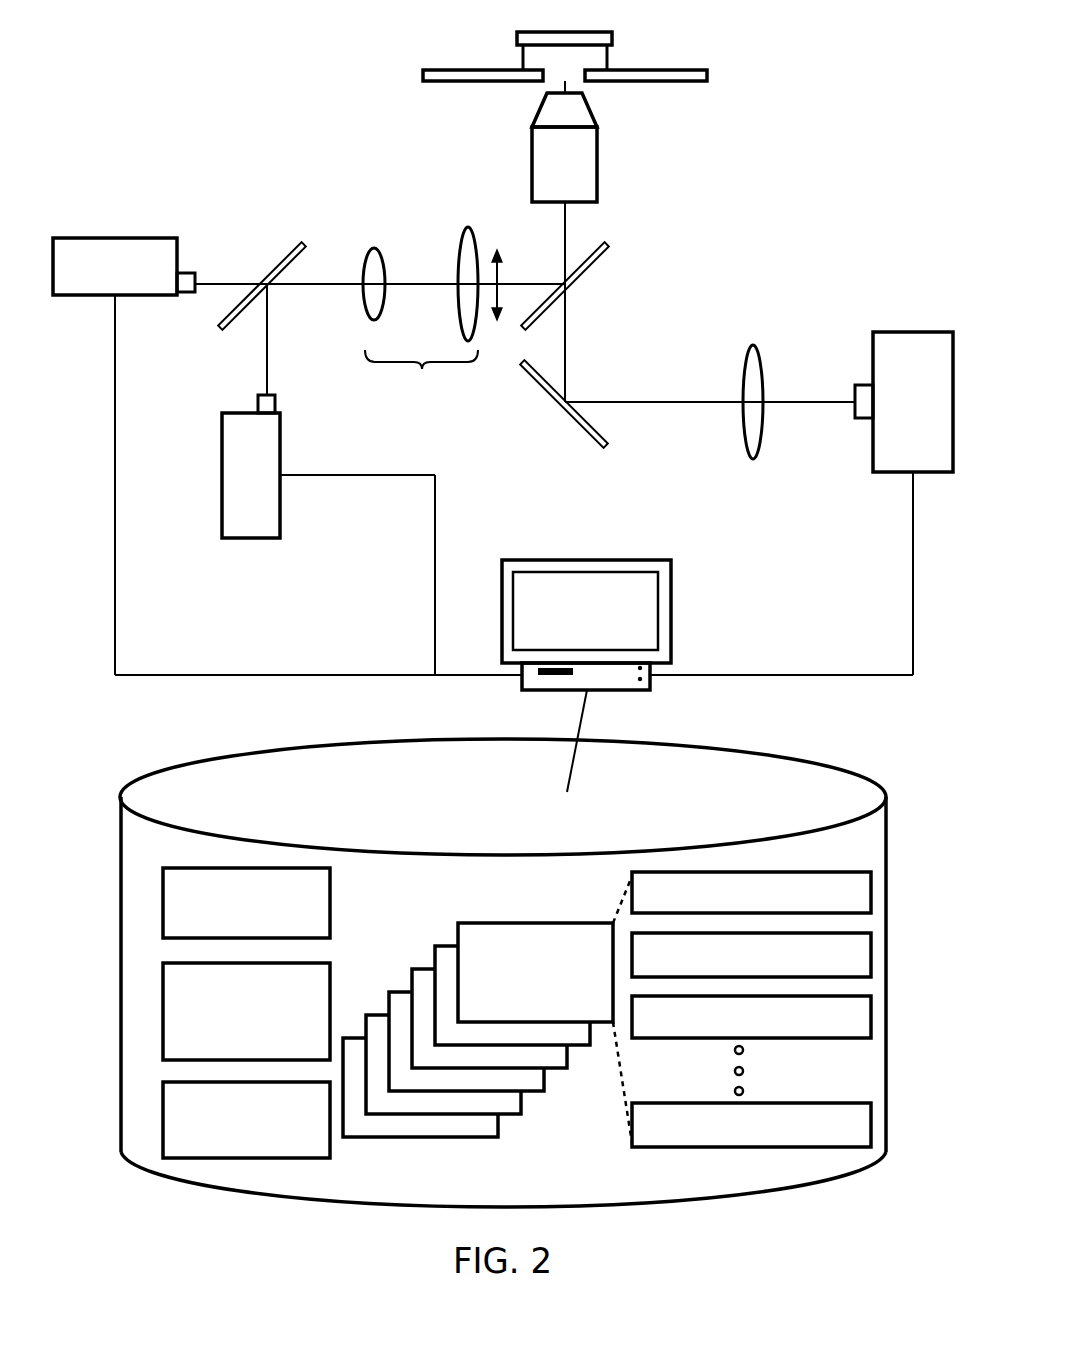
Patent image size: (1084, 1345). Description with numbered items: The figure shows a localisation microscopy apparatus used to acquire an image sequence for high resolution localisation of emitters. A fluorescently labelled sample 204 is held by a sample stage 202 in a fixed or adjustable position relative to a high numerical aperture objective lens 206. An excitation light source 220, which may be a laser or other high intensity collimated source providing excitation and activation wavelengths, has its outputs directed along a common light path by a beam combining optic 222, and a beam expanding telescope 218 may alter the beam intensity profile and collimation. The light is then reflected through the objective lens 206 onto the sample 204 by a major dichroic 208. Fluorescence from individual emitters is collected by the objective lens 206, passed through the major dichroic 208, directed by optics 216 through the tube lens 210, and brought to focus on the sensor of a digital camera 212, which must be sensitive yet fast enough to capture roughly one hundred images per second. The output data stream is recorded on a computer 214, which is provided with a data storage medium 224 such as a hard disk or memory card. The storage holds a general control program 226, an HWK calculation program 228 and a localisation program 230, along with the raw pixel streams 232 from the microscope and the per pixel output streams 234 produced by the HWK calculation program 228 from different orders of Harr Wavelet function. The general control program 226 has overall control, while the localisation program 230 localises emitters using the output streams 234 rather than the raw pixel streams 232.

The sample stage 202 is at (473, 69).
The sample 204 is at (612, 42).
The objective lens 206 is at (597, 158).
The major dichroic 208 is at (603, 258).
The tube lens 210 is at (763, 360).
The digital camera 212 is at (913, 332).
The computer 214 is at (672, 610).
The optics 216 is at (558, 406).
The beam expanding telescope 218 is at (432, 316).
The excitation light source 220 is at (222, 475).
The beam combining optic 222 is at (283, 258).
The data storage medium 224 is at (143, 845).
The general control program 226 is at (163, 903).
The HWK calculation program 228 is at (163, 1012).
The localisation program 230 is at (163, 1115).
The raw pixel streams 232 is at (447, 935).
The per pixel output streams 234 is at (873, 892).